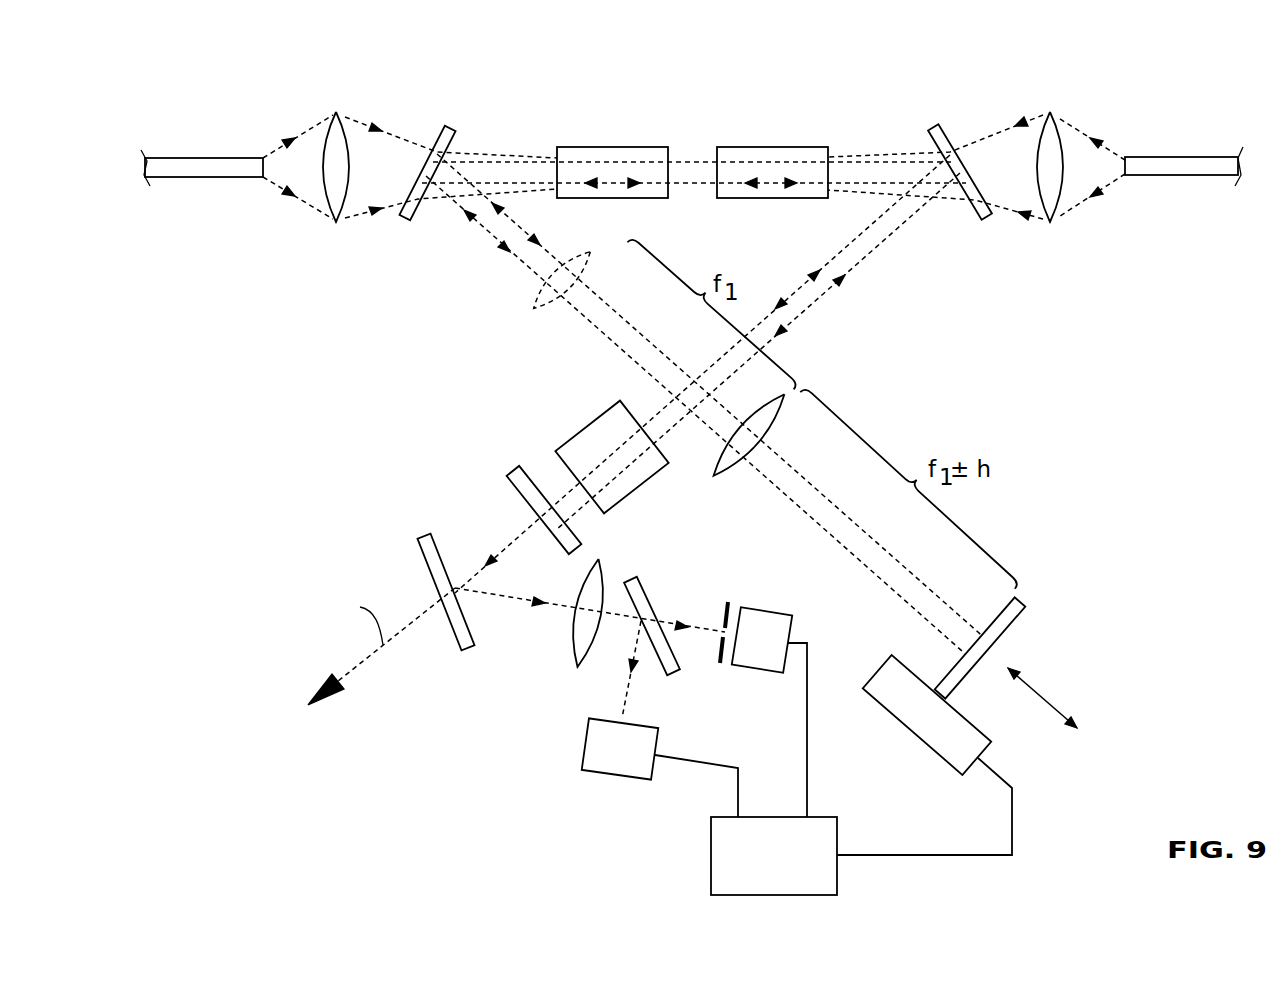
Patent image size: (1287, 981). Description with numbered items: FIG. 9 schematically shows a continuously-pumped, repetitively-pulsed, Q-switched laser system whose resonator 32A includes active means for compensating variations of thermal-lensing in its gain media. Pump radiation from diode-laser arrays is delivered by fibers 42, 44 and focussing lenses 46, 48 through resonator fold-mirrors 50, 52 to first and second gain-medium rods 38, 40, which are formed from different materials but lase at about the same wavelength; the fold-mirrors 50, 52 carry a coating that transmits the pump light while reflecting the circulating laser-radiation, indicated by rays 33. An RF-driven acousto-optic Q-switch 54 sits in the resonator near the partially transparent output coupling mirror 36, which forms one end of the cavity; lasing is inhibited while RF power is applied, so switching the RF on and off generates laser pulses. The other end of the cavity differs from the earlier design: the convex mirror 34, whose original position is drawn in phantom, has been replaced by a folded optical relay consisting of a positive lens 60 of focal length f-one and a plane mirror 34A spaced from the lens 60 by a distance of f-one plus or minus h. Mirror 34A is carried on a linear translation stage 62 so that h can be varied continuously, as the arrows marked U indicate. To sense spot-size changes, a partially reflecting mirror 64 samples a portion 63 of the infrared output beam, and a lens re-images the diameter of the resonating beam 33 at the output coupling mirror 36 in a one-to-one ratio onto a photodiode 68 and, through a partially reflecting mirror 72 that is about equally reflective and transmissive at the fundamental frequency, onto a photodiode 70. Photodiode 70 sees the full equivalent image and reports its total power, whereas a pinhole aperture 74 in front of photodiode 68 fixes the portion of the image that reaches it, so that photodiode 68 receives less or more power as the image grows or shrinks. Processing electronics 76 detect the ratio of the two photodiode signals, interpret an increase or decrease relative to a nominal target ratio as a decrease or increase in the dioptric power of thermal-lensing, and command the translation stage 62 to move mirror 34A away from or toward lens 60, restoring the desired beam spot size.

The fiber 42 is at (227, 158).
The fiber 44 is at (1165, 157).
The focussing lens 46 is at (322, 145).
The focussing lens 48 is at (1062, 137).
The resonator fold-mirror 50 is at (436, 128).
The resonator fold-mirror 52 is at (957, 128).
The first gain-medium rod 38 is at (597, 147).
The second gain-medium rod 40 is at (732, 147).
The resonator 32A is at (717, 141).
The laser-radiation rays 33 is at (455, 205).
The convex mirror 34 is at (538, 310).
The plane mirror 34A is at (1018, 620).
The output coupling mirror 36 is at (518, 497).
The acousto-optic Q-switch 54 is at (630, 497).
The positive lens 60 is at (733, 463).
The translation stage 62 is at (977, 722).
The sampled portion of output beam 63 is at (507, 598).
The partially reflecting mirror 64 is at (453, 640).
The photodiode 68 is at (758, 607).
The photodiode 70 is at (602, 773).
The partially reflecting mirror 72 is at (645, 592).
The pinhole aperture 74 is at (720, 663).
The processing electronics 76 is at (712, 842).